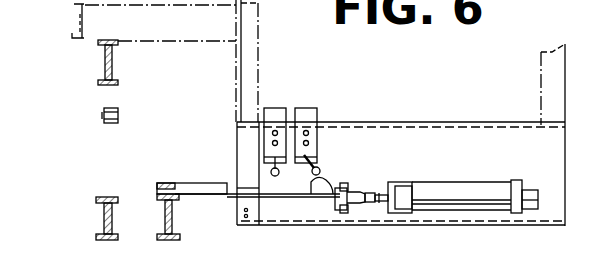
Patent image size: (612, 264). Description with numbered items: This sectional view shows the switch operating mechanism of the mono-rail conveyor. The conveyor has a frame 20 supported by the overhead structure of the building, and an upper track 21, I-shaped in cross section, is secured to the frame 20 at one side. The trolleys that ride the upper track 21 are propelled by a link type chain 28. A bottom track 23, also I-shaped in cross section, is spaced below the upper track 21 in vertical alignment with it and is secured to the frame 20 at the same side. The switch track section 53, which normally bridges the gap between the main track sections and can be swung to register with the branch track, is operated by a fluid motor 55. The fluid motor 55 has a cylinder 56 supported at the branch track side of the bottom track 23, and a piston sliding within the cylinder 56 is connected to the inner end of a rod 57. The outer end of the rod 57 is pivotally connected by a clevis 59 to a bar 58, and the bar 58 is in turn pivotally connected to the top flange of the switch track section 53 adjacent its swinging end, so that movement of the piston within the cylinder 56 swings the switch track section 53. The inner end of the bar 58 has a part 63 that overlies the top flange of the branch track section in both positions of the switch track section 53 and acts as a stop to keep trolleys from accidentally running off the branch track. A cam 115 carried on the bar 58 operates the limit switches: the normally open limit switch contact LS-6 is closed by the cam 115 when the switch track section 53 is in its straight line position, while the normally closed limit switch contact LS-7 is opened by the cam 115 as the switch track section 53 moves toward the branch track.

The frame 20 is at (78, 13).
The upper track 21 is at (114, 79).
The link type chain 28 is at (120, 116).
The bottom track 23 is at (104, 208).
The part 63 is at (190, 189).
The switch track section 53 is at (173, 240).
The bar 58 is at (297, 199).
The limit switch contact LS-6 is at (274, 108).
The limit switch contact LS-7 is at (308, 108).
The cam 115 is at (311, 183).
The clevis 59 is at (357, 190).
The rod 57 is at (380, 193).
The fluid motor 55 is at (452, 182).
The cylinder 56 is at (485, 195).